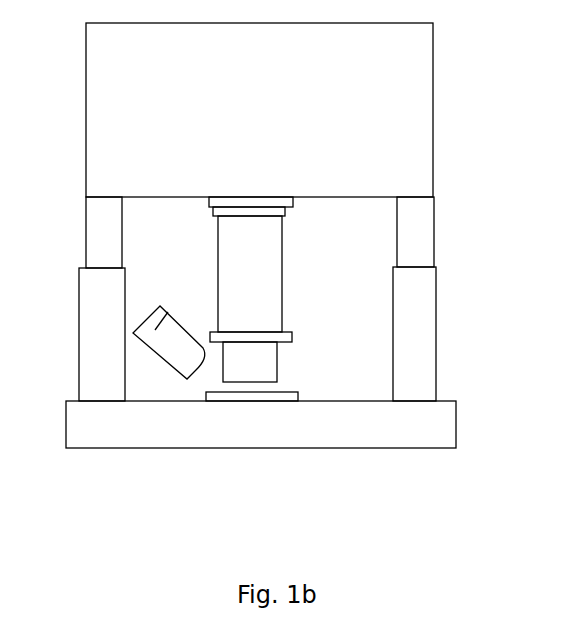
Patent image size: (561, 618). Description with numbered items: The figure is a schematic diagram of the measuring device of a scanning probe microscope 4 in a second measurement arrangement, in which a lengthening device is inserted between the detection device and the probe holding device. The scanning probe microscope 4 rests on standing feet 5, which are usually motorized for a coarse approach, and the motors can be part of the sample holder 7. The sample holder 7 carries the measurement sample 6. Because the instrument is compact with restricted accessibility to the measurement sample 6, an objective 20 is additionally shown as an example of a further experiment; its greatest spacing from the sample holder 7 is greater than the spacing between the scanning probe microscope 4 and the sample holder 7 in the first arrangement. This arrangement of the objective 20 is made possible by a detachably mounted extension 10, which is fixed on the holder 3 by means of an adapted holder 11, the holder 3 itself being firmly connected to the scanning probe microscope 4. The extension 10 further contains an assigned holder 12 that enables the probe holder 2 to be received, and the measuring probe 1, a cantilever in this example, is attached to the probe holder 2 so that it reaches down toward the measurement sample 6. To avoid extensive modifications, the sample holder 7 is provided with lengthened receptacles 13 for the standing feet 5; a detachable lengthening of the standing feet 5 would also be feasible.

The measuring probe 1 is at (242, 388).
The probe holder 2 is at (245, 367).
The holder 3 is at (293, 207).
The scanning probe microscope 4 is at (415, 112).
The standing feet 5 is at (418, 233).
The measurement sample 6 is at (295, 400).
The sample holder 7 is at (445, 427).
The extension 10 is at (282, 290).
The adapted holder 11 is at (218, 218).
The assigned holder 12 is at (292, 338).
The lengthened receptacles 13 is at (413, 339).
The objective 20 is at (163, 304).